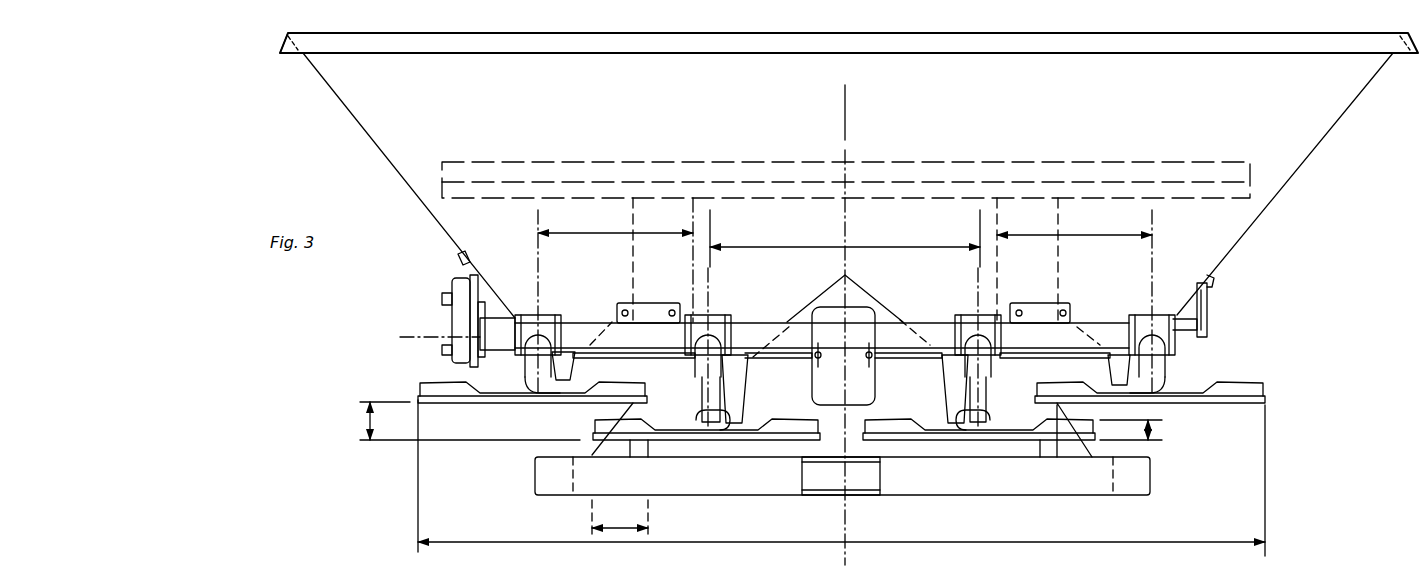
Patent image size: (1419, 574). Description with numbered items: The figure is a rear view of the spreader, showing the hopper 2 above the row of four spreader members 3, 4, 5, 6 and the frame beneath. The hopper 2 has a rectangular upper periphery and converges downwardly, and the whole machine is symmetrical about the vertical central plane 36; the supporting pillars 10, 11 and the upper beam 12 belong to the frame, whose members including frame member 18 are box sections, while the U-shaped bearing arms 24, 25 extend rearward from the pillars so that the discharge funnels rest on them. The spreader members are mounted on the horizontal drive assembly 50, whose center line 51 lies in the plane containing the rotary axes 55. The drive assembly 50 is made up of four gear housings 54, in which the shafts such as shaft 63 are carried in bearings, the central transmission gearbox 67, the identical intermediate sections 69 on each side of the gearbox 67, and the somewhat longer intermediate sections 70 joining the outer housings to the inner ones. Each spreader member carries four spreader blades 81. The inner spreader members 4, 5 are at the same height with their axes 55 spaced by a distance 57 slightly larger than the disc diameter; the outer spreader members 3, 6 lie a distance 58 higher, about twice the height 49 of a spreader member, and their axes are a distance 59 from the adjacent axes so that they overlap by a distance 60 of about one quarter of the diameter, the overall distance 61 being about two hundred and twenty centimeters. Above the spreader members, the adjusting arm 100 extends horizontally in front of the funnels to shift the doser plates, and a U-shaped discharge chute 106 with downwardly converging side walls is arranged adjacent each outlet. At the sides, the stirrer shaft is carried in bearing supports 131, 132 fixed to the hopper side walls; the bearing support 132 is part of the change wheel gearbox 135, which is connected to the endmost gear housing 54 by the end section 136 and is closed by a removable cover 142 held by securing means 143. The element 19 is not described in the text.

The hopper 2 is at (1325, 133).
The spreader member 3 is at (1265, 400).
The spreader member 4 is at (1095, 436).
The spreader member 5 is at (593, 432).
The spreader member 6 is at (450, 412).
The supporting pillar 10 is at (1058, 262).
The supporting pillar 11 is at (633, 257).
The upper beam 12 is at (1148, 165).
The frame member 18 is at (722, 500).
The central frame block 19 is at (880, 465).
The bearing arm 24 is at (1042, 320).
The bearing arm 25 is at (665, 320).
The central plane 36 is at (845, 122).
The height of spreader member 49 is at (1150, 430).
The drive assembly 50 is at (800, 318).
The center line 51 is at (447, 317).
The gear housing 54 is at (552, 315).
The rotary axis 55 is at (538, 228).
The distance 57 is at (845, 237).
The distance 58 is at (370, 424).
The distance 59 is at (845, 221).
The distance 60 is at (620, 518).
The overall distance 61 is at (841, 478).
The shaft 63 is at (702, 383).
The transmission gearbox 67 is at (876, 392).
The intermediate section 69 is at (774, 316).
The intermediate section 70 is at (596, 316).
The spreader blade 81 is at (834, 401).
The adjusting arm 100 is at (760, 362).
The discharge chute 106 is at (577, 368).
The bearing support 131 is at (1208, 300).
The bearing support 132 is at (458, 257).
The change wheel gearbox 135 is at (452, 285).
The end section 136 is at (490, 355).
The removable cover 142 is at (442, 355).
The securing means 143 is at (442, 304).